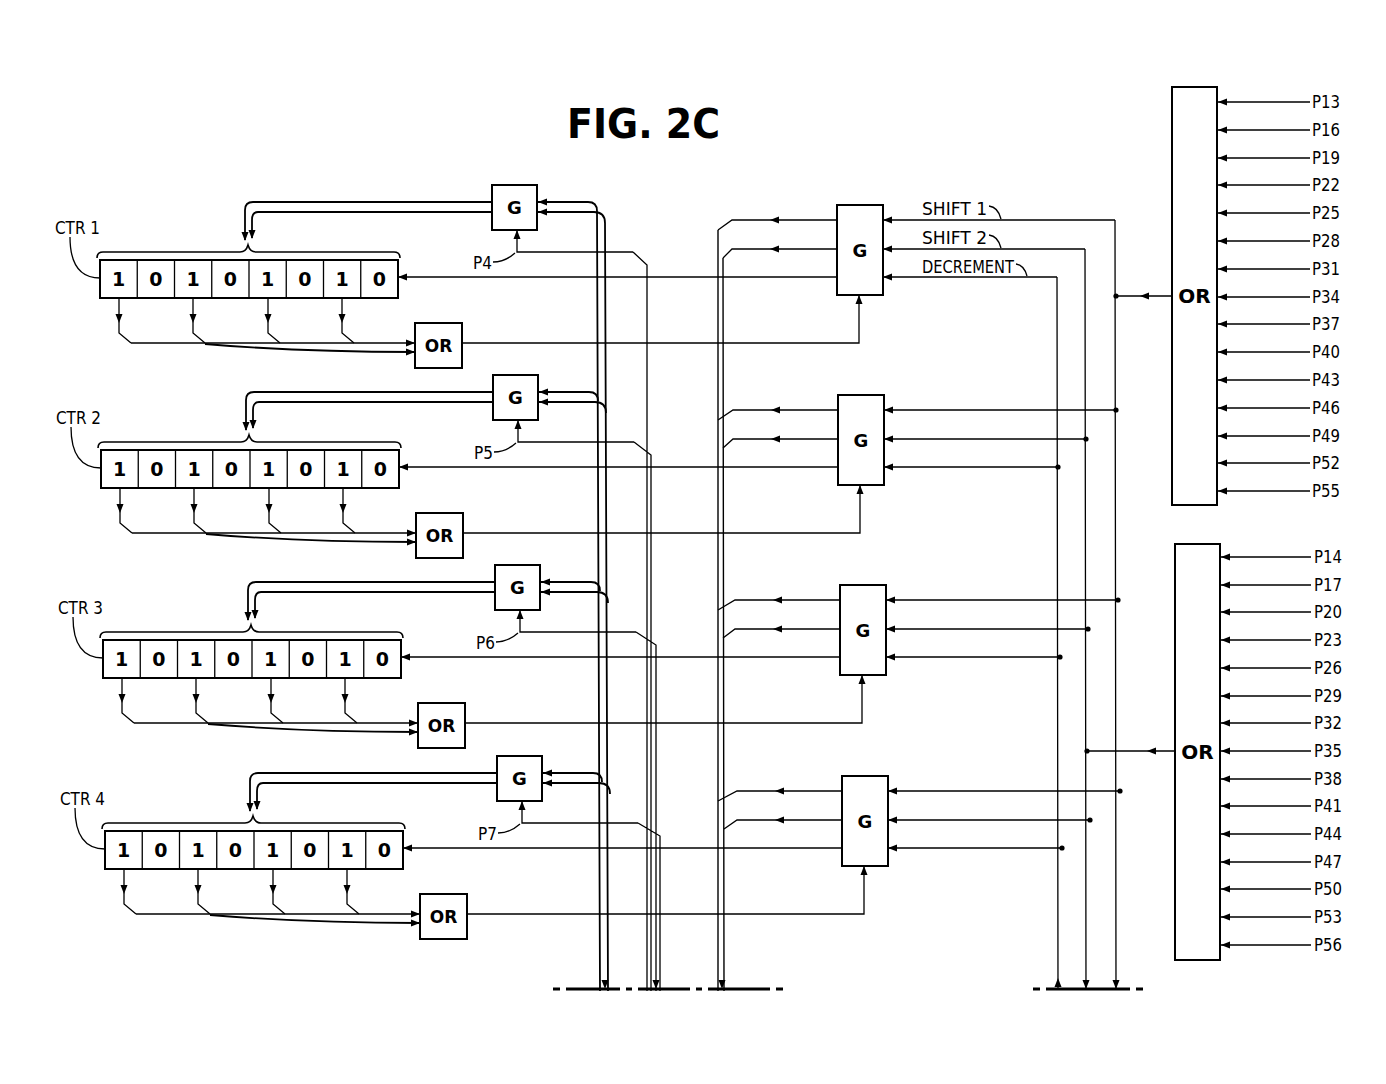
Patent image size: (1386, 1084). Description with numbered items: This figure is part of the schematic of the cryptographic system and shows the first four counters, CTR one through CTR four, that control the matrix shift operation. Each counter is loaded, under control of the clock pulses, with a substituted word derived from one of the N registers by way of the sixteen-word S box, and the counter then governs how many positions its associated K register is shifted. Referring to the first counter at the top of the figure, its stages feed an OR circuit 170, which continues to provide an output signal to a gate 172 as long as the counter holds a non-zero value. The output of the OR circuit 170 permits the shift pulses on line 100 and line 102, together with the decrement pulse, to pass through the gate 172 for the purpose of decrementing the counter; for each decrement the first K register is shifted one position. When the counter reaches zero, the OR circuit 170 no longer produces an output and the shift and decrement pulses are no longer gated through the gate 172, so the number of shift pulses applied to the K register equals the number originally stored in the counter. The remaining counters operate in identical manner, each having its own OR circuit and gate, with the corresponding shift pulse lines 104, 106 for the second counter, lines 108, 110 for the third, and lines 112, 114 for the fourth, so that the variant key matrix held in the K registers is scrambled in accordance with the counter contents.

The OR circuit 170 is at (452, 323).
The gate 172 is at (859, 205).
The line 100 is at (781, 220).
The line 102 is at (781, 249).
The gate output line 104 is at (782, 410).
The gate output line 106 is at (782, 439).
The gate output line 108 is at (784, 600).
The gate output line 110 is at (784, 629).
The gate output line 112 is at (786, 791).
The gate output line 114 is at (786, 820).